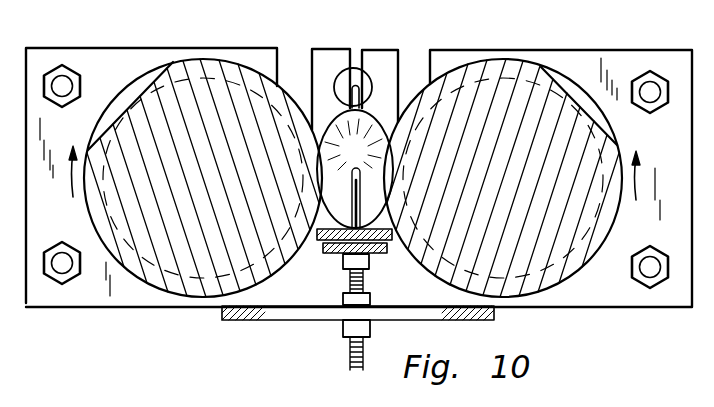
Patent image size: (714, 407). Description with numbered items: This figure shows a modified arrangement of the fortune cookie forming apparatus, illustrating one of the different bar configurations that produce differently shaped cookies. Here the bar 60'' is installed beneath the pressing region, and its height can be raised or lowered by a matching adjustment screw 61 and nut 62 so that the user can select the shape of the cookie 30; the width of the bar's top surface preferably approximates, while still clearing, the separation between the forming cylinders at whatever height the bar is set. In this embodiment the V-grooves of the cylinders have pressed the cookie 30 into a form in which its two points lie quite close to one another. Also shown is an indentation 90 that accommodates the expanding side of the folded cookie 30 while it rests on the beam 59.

The indentation 90 is at (343, 75).
The beam 59 is at (356, 84).
The cookie 30 is at (377, 122).
The adjustment screw 61 is at (348, 282).
The bar 60'' is at (365, 269).
The nut 62 is at (342, 304).